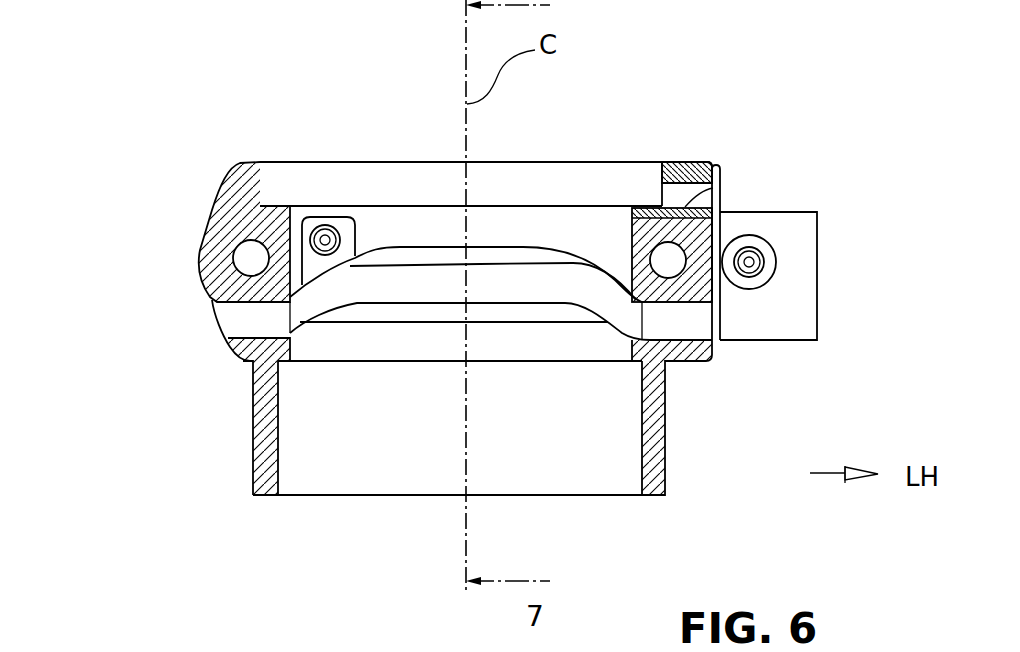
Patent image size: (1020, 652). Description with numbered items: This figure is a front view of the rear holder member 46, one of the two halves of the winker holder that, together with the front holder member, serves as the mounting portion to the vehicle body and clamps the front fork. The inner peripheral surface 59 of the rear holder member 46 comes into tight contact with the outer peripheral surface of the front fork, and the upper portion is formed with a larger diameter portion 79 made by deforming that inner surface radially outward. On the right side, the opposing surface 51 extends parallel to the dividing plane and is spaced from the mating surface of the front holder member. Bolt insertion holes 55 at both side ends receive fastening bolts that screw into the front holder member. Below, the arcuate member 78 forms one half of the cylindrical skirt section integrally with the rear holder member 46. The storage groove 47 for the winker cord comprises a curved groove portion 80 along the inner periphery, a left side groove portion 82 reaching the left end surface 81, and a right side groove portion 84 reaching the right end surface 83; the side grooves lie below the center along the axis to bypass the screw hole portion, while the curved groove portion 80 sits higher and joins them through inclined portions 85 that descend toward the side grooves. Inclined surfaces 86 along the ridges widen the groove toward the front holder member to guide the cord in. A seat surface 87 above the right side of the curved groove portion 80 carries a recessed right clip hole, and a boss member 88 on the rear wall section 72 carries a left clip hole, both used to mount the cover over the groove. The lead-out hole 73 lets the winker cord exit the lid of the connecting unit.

The rear holder member 46 is at (600, 140).
The storage groove 47 is at (428, 253).
The opposing surface 51 is at (233, 213).
The bolt insertion hole 55 is at (240, 257).
The inner peripheral surface 59 is at (552, 227).
The rear wall section 72 is at (787, 213).
The lead-out hole 73 is at (717, 207).
The arcuate member 78 is at (667, 460).
The larger diameter portion 79 is at (627, 172).
The curved groove portion 80 is at (397, 277).
The left end surface 81 is at (720, 297).
The left side groove portion 82 is at (673, 317).
The right end surface 83 is at (210, 283).
The right side groove portion 84 is at (245, 320).
The inclined portion 85 is at (298, 310).
The inclined surface 86 is at (493, 253).
The seat surface 87 is at (317, 230).
The boss member 88 is at (793, 230).